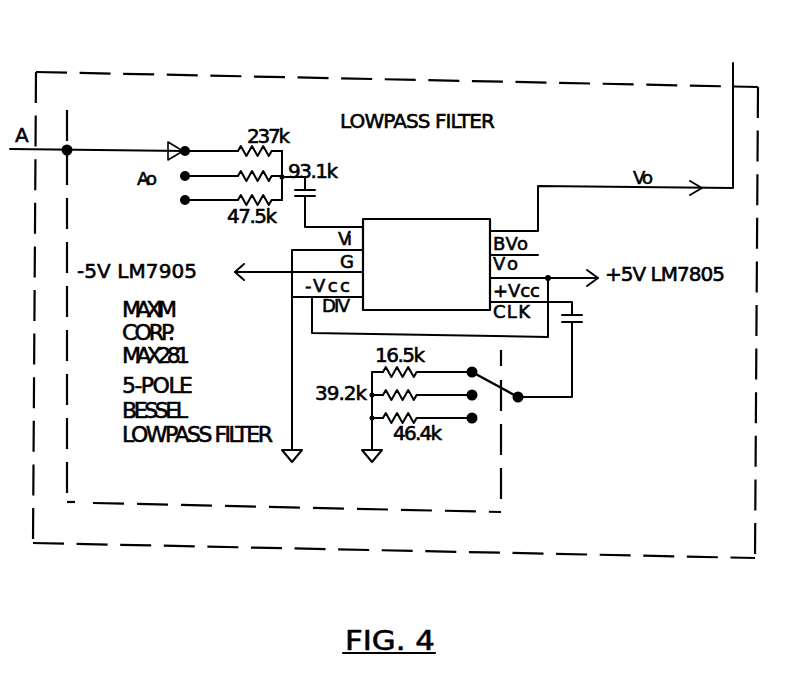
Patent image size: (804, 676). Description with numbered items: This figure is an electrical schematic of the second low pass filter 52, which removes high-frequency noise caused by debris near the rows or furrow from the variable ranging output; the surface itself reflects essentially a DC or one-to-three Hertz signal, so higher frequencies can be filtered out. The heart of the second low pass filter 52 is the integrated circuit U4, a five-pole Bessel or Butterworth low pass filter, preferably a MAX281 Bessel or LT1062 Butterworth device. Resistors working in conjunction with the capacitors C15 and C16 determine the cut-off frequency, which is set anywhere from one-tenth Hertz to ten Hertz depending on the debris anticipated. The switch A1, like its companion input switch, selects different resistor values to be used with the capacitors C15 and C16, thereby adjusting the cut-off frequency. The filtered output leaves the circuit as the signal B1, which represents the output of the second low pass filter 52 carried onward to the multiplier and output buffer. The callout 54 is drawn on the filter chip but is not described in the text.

The second low pass filter 52 is at (392, 552).
The lowpass filter integrated circuit (U4, MAX281) 54 is at (491, 170).
The integrated circuit U4 is at (426, 253).
The capacitor C15 is at (348, 201).
The capacitor C16 is at (572, 346).
The switch A1 is at (505, 405).
The signal from the second low pass filter B1 is at (611, 147).